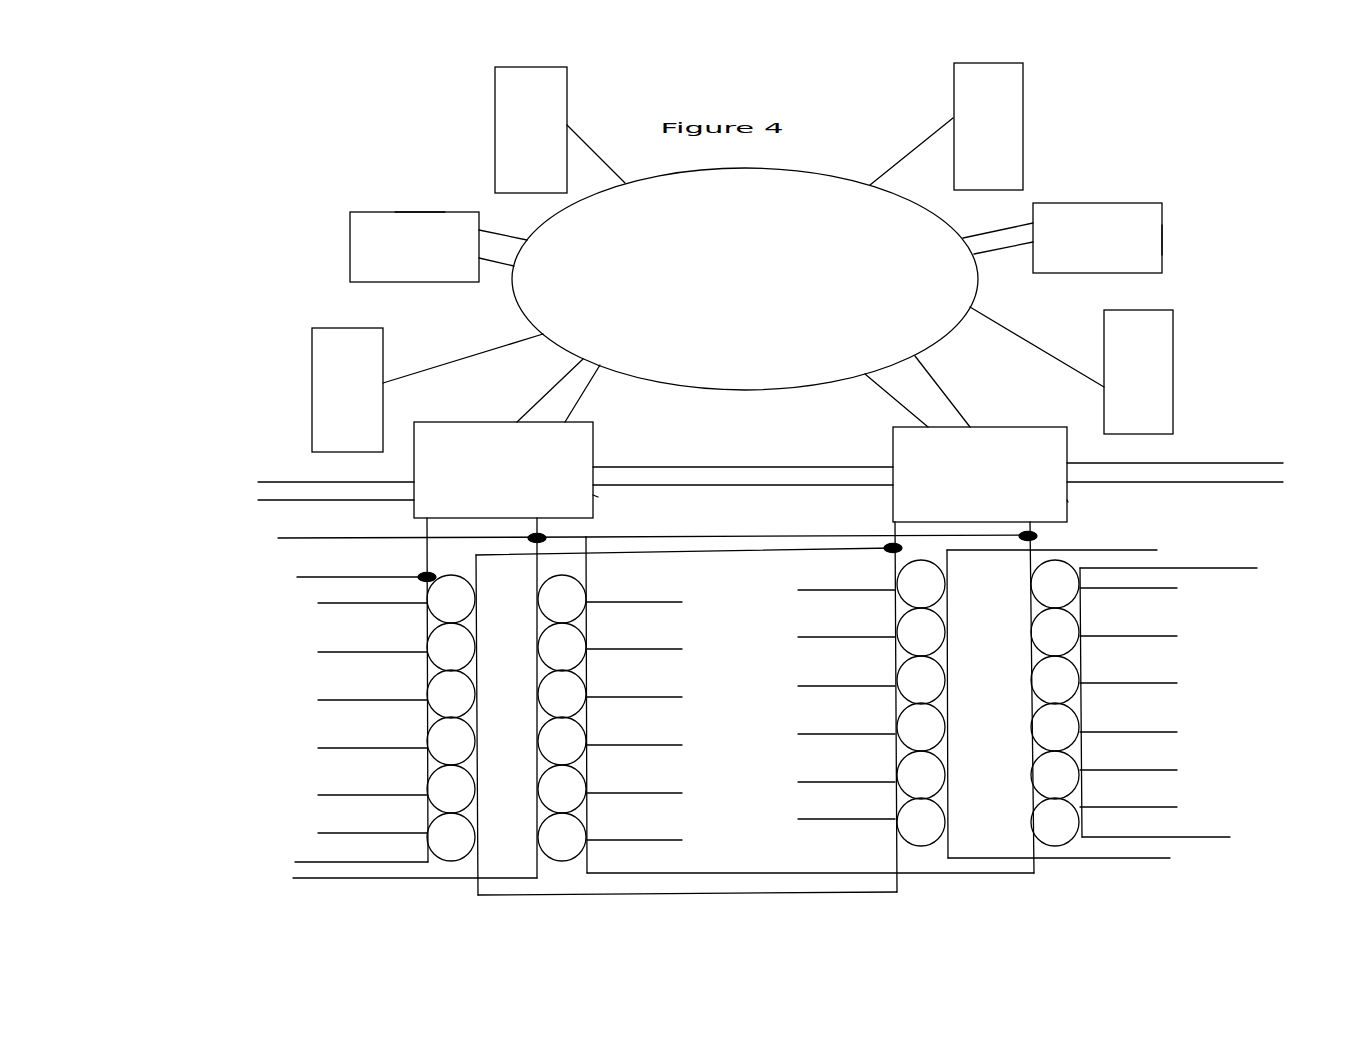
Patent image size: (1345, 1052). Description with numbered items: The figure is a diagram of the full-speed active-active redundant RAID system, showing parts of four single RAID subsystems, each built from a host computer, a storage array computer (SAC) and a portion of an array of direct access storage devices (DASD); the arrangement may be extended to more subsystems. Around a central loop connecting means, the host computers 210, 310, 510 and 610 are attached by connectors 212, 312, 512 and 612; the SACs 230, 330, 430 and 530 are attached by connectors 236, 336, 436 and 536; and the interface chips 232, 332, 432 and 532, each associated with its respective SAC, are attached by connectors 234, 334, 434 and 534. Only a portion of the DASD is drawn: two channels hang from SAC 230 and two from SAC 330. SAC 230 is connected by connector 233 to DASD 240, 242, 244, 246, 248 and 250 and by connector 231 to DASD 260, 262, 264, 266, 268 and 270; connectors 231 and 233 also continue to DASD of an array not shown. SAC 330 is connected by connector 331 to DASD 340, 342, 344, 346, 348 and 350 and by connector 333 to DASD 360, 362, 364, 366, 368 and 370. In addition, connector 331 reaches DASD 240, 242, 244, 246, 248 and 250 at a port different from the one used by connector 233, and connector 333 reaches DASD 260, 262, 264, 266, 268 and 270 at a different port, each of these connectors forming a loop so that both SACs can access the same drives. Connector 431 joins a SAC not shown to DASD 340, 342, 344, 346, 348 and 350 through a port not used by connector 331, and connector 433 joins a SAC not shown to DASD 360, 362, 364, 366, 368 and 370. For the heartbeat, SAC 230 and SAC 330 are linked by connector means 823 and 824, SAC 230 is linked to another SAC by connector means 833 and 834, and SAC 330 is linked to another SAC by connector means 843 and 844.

The host computer 210 is at (312, 384).
The connector 212 is at (507, 345).
The storage array computer (SAC) 230 is at (462, 420).
The connector 231 is at (350, 537).
The interface chip 232 is at (598, 497).
The connector 233 is at (378, 575).
The connector 234 is at (583, 382).
The connector 236 is at (550, 392).
The direct access storage device (DASD) 240 is at (377, 599).
The direct access storage device (DASD) 242 is at (377, 647).
The direct access storage device (DASD) 244 is at (377, 694).
The direct access storage device (DASD) 246 is at (378, 741).
The direct access storage device (DASD) 248 is at (378, 789).
The direct access storage device (DASD) 250 is at (379, 837).
The direct access storage device (DASD) 260 is at (628, 599).
The direct access storage device (DASD) 262 is at (628, 647).
The direct access storage device (DASD) 264 is at (629, 694).
The direct access storage device (DASD) 266 is at (629, 741).
The direct access storage device (DASD) 268 is at (629, 789).
The direct access storage device (DASD) 270 is at (630, 837).
The host computer 310 is at (1175, 377).
The connector 312 is at (1020, 338).
The storage array computer (SAC) 330 is at (890, 455).
The connector 331 is at (673, 554).
The interface chip 332 is at (1068, 502).
The connector 333 is at (715, 535).
The connector 334 is at (940, 376).
The connector 336 is at (897, 398).
The direct access storage device (DASD) 340 is at (852, 584).
The direct access storage device (DASD) 342 is at (852, 632).
The direct access storage device (DASD) 344 is at (853, 680).
The direct access storage device (DASD) 346 is at (854, 727).
The direct access storage device (DASD) 348 is at (854, 775).
The direct access storage device (DASD) 350 is at (854, 822).
The direct access storage device (DASD) 360 is at (1122, 584).
The direct access storage device (DASD) 362 is at (1122, 632).
The direct access storage device (DASD) 364 is at (1122, 680).
The direct access storage device (DASD) 366 is at (1123, 727).
The direct access storage device (DASD) 368 is at (1124, 775).
The direct access storage device (DASD) 370 is at (1124, 822).
The storage array computer (SAC) 430 is at (1119, 203).
The connector 431 is at (1157, 554).
The interface chip 432 is at (1163, 243).
The connector 433 is at (1237, 563).
The connector 434 is at (980, 252).
The connector 436 is at (1005, 223).
The host computer 510 is at (497, 132).
The connector 512 is at (585, 140).
The storage array computer (SAC) 530 is at (351, 250).
The interface chip 532 is at (420, 210).
The connector 534 is at (502, 230).
The connector 536 is at (492, 260).
The host computer 610 is at (1023, 135).
The connector 612 is at (927, 138).
The connector means 823 is at (660, 463).
The connector means 824 is at (815, 485).
The connector means 833 is at (287, 477).
The connector means 834 is at (275, 500).
The connector means 843 is at (1248, 462).
The connector means 844 is at (1215, 482).